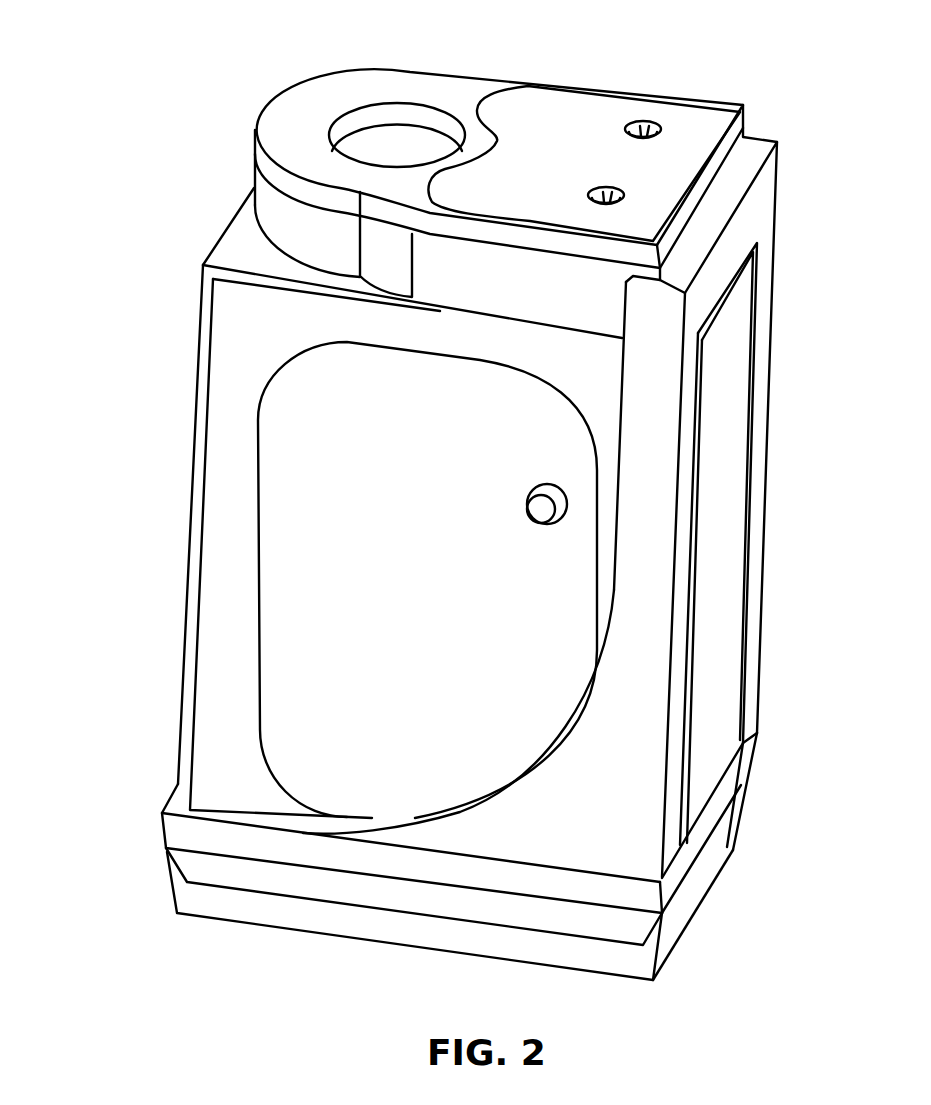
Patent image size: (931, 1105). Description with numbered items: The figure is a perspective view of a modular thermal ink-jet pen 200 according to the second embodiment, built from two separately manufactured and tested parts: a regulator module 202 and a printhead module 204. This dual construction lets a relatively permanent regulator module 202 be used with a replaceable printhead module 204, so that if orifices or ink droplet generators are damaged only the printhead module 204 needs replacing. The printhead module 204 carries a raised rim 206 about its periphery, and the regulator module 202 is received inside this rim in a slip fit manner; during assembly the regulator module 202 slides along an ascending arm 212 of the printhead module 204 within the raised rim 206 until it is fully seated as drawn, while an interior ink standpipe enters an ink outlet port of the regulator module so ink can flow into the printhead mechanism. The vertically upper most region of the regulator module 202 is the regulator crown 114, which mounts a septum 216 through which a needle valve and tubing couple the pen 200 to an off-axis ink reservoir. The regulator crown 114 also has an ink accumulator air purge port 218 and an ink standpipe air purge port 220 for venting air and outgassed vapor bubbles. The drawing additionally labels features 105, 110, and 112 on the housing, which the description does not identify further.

The pen 200 is at (142, 284).
The regulator module 202 is at (176, 473).
The printhead module 204 is at (165, 831).
The raised rim 206 is at (176, 796).
The side panel 105 is at (727, 551).
The knob 110 is at (541, 504).
The front opening 112 is at (338, 417).
The regulator crown 114 is at (253, 200).
The ascending arm 212 is at (583, 781).
The septum 216 is at (393, 143).
The ink accumulator air purge port 218 is at (633, 127).
The ink standpipe air purge port 220 is at (603, 188).